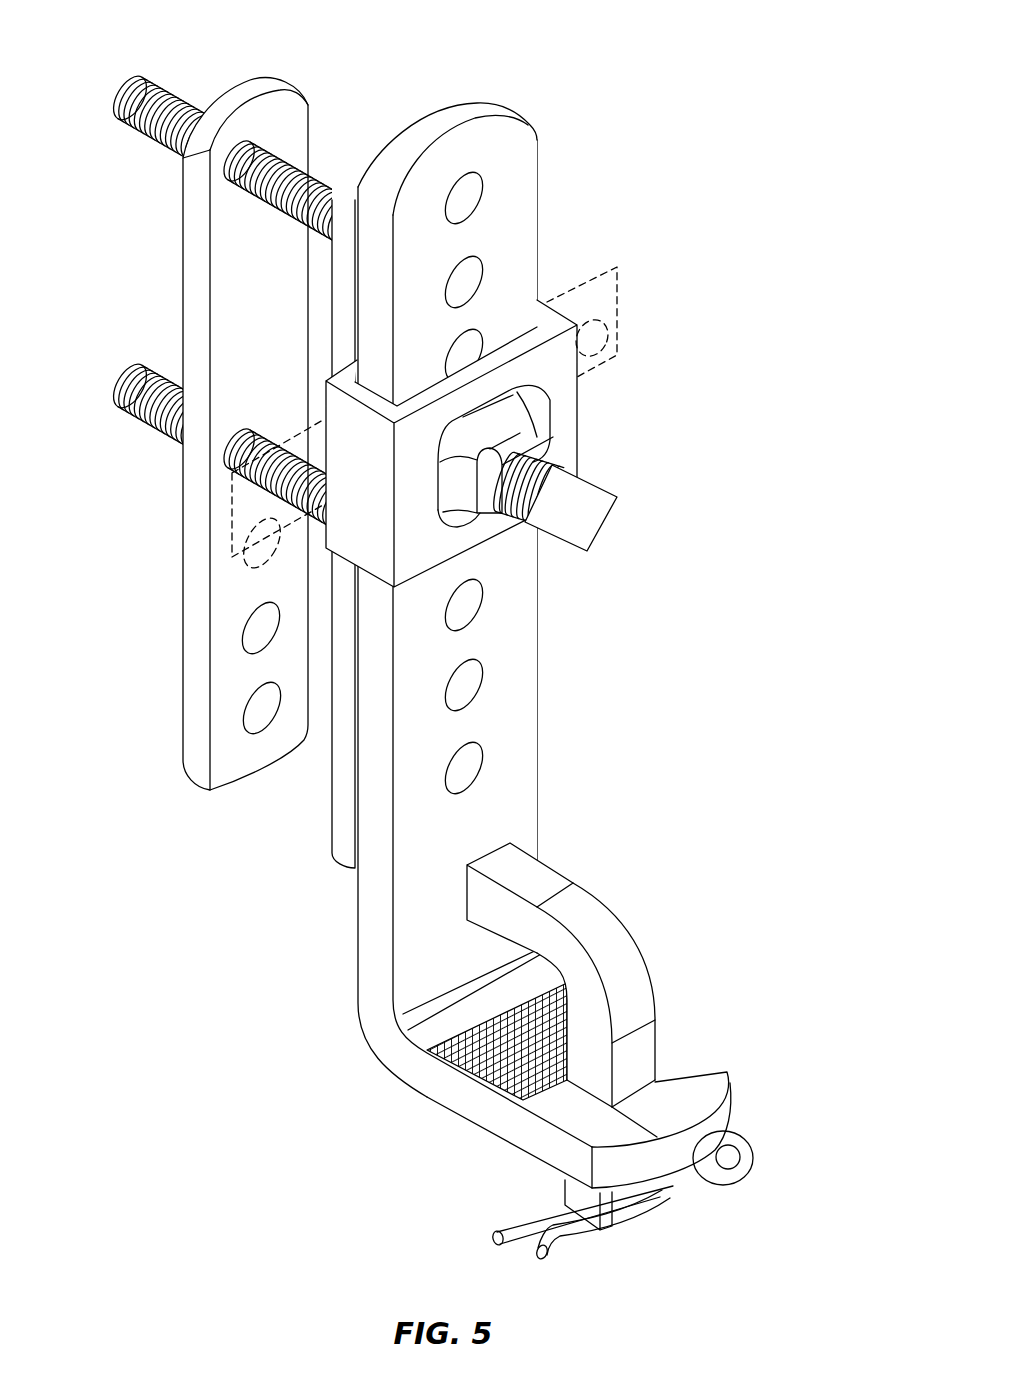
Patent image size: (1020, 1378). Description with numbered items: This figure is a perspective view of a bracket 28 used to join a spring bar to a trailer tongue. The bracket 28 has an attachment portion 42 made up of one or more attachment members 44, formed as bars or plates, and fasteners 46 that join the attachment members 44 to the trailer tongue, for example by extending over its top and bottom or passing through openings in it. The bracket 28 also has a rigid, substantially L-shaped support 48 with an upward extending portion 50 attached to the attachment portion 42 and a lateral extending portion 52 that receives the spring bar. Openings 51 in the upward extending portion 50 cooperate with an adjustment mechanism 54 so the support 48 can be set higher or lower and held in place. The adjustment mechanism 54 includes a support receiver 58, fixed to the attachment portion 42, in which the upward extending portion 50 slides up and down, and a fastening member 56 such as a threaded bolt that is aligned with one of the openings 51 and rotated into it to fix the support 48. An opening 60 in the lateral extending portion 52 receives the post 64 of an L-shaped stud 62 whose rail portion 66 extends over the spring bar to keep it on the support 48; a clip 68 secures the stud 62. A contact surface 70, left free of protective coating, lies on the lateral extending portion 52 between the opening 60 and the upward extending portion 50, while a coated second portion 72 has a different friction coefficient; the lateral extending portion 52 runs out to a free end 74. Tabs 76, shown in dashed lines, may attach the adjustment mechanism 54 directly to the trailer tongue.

The bracket 28 is at (595, 164).
The attachment portion 42 is at (305, 92).
The attachment member 44 is at (183, 274).
The fastener 46 is at (163, 86).
The support 48 is at (515, 730).
The upward extending portion 50 is at (537, 633).
The openings 51 is at (455, 703).
The lateral extending portion 52 is at (643, 1048).
The adjustment mechanism 54 is at (584, 428).
The fastening member 56 is at (595, 512).
The support receiver 58 is at (565, 389).
The opening 60 is at (642, 1093).
The stud 62 is at (620, 932).
The post 64 is at (637, 1047).
The rail portion 66 is at (558, 867).
The clip 68 is at (752, 1163).
The contact surface 70 is at (467, 1047).
The second portion 72 is at (560, 1110).
The free end 74 is at (710, 1130).
The tabs 76 is at (232, 505).